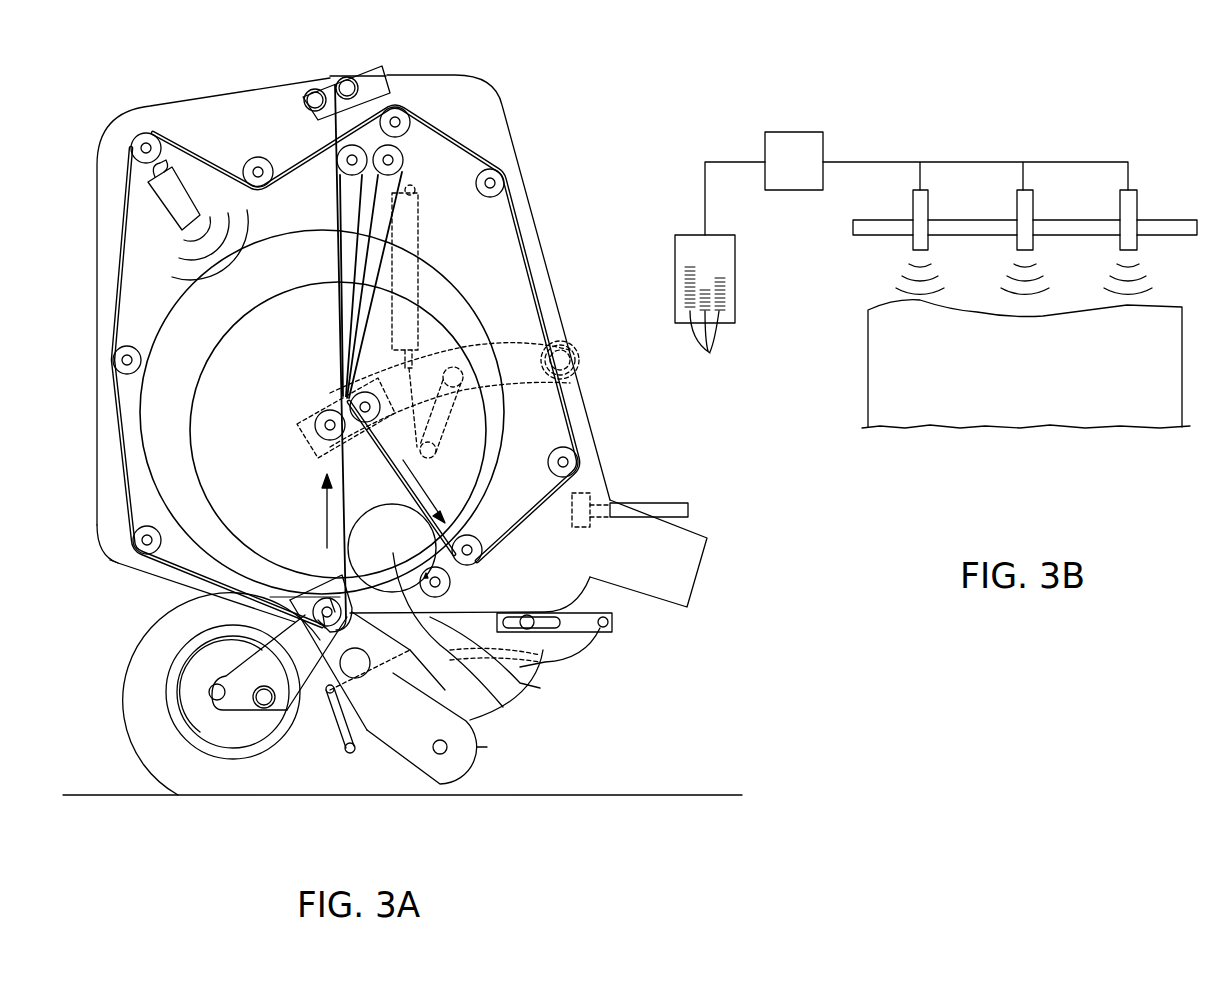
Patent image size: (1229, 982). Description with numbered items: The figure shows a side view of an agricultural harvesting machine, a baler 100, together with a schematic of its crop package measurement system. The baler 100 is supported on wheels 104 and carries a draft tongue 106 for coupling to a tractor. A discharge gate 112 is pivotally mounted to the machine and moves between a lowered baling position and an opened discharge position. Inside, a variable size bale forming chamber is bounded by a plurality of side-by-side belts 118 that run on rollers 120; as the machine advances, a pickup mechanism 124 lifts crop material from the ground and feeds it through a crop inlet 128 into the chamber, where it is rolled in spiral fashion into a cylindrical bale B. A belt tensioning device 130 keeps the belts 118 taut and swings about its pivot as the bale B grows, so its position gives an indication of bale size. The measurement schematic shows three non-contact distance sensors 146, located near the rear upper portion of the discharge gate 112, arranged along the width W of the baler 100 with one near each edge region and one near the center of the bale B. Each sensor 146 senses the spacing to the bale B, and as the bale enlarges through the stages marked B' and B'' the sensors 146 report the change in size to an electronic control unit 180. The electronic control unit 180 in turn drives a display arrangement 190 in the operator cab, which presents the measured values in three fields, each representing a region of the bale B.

In FIG. 3A, the baler 100 is at (95, 333).
In FIG. 3A, the wheels 104 is at (307, 762).
In FIG. 3A, the draft tongue 106 is at (675, 590).
In FIG. 3A, the discharge gate 112 is at (147, 578).
In FIG. 3A, the belts 118 is at (267, 547).
In FIG. 3A, the rollers 120 is at (300, 700).
In FIG. 3A, the pickup mechanism 124 is at (457, 760).
In FIG. 3A, the crop inlet 128 is at (393, 597).
In FIG. 3A, the belt tensioning device 130 is at (517, 357).
In FIG. 3A, the distance sensors 146 is at (173, 190).
In FIG. 3B, the distance sensors 146 is at (920, 208).
In FIG. 3B, the Electronic Control Unit (ECU) 180 is at (798, 180).
In FIG. 3B, the display arrangement 190 is at (735, 283).
In FIG. 3A, the bale B is at (554, 657).
In FIG. 3B, the bale B is at (1026, 384).
In FIG. 3A, the bale (increased size) B' is at (214, 695).
In FIG. 3A, the bale (further increased size) B'' is at (99, 463).
In FIG. 3B, the width W is at (1170, 485).